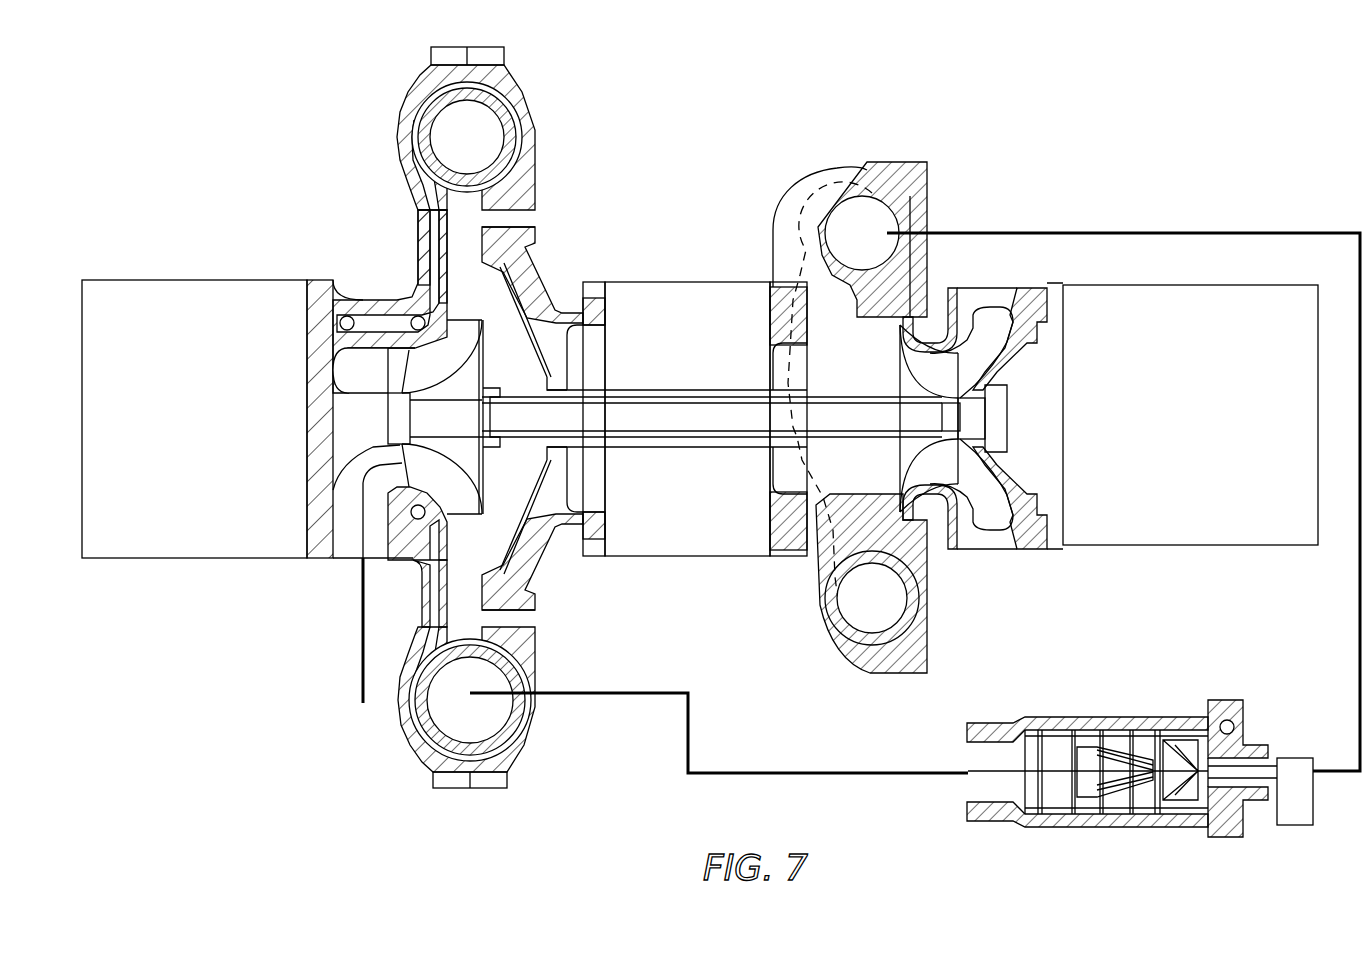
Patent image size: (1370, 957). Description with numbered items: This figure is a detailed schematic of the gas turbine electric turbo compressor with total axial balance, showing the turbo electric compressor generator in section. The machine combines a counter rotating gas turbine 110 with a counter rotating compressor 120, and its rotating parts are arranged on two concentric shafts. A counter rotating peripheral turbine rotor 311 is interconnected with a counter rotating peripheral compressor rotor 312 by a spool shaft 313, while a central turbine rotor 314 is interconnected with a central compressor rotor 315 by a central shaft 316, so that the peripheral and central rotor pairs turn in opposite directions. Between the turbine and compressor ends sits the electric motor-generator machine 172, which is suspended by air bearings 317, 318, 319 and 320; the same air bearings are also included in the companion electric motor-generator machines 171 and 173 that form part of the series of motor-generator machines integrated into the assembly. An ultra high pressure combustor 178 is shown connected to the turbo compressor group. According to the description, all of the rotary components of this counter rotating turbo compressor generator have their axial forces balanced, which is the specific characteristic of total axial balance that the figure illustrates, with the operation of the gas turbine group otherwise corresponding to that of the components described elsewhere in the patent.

The counter rotating gas turbine 110 is at (523, 105).
The counter rotating compressor 120 is at (842, 637).
The electric motor-generator machine 171 is at (181, 280).
The electric motor-generator machine 172 is at (655, 538).
The electric motor-generator machine 173 is at (1171, 285).
The ultra high pressure combustor 178 is at (1090, 717).
The counter rotating peripheral turbine rotor 311 is at (512, 525).
The counter rotating peripheral compressor rotor 312 is at (868, 500).
The spool shaft 313 is at (673, 440).
The central turbine rotor 314 is at (432, 360).
The central compressor rotor 315 is at (898, 448).
The central shaft 316 is at (725, 417).
The air bearing 317 is at (783, 478).
The air bearing 318 is at (585, 495).
The air bearing 319 is at (322, 526).
The air bearing 320 is at (1040, 454).